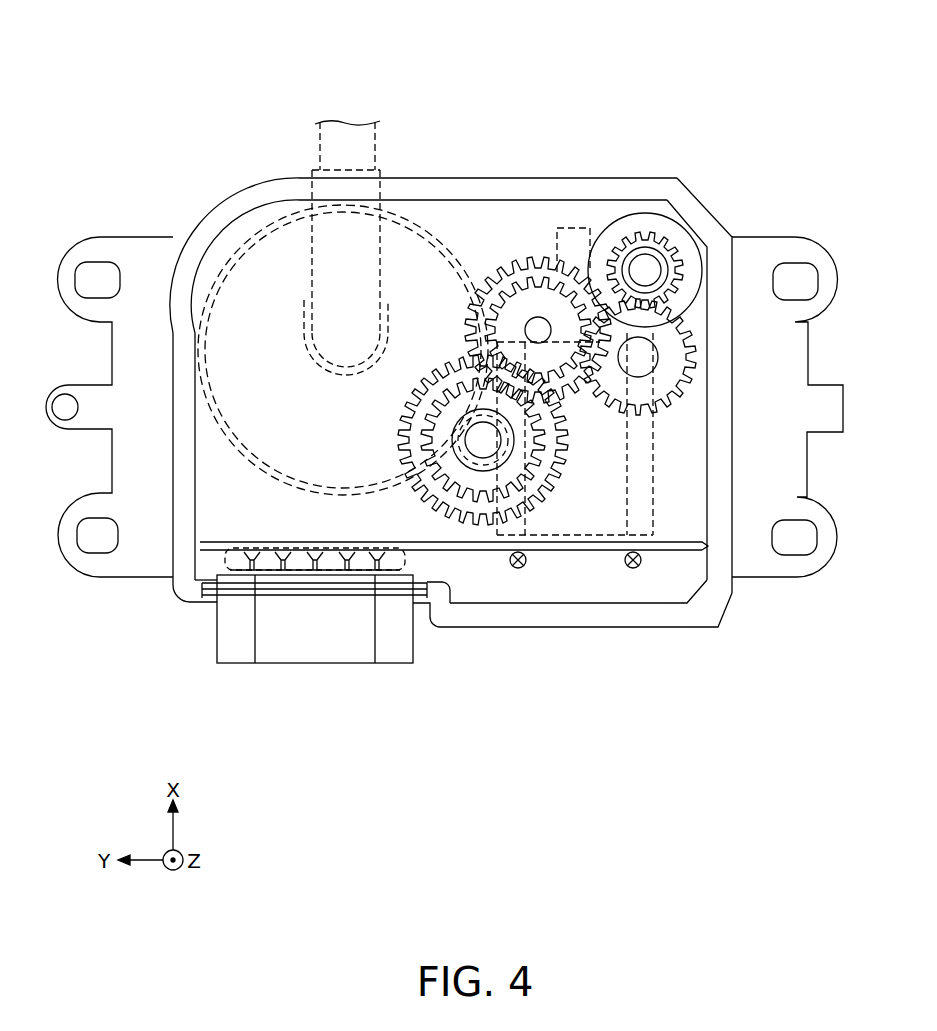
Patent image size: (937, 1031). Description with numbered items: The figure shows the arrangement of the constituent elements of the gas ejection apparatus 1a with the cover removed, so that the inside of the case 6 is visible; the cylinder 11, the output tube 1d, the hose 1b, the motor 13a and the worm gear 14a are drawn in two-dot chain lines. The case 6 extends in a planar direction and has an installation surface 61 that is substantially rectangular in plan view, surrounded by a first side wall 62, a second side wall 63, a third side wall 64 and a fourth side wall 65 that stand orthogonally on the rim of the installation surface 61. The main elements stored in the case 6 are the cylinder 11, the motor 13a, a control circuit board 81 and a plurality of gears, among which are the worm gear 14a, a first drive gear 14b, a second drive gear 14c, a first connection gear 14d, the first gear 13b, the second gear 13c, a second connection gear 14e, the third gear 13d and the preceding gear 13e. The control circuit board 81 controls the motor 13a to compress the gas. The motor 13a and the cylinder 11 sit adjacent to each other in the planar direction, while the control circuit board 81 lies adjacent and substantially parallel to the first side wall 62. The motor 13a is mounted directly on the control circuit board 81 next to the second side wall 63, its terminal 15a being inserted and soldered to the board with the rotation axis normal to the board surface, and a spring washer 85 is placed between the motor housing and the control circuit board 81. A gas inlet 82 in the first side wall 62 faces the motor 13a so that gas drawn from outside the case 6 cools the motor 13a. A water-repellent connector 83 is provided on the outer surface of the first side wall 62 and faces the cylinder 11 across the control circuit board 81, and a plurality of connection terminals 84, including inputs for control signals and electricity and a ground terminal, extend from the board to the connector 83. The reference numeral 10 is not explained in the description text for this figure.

The gas ejection apparatus 1a is at (220, 68).
The hose 1b is at (348, 130).
The output tube 1d is at (310, 305).
The case 6 is at (722, 612).
The case 10 is at (282, 246).
The cylinder 11 is at (237, 395).
The motor 13a is at (655, 490).
The first gear 13b is at (700, 348).
The second gear 13c is at (522, 262).
The third gear 13d is at (547, 480).
The preceding gear 13e is at (505, 525).
The worm gear 14a is at (575, 240).
The first drive gear 14b is at (640, 212).
The second drive gear 14c is at (665, 246).
The first connection gear 14d is at (688, 323).
The second connection gear 14e is at (505, 290).
The terminal 15a is at (518, 570).
The installation surface 61 is at (213, 497).
The first side wall 62 is at (440, 607).
The second side wall 63 is at (720, 440).
The third side wall 64 is at (183, 465).
The fourth side wall 65 is at (444, 192).
The control circuit board 81 is at (700, 548).
The gas inlet 82 is at (656, 640).
The connector 83 is at (228, 625).
The connection terminals 84 is at (328, 572).
The spring washer 85 is at (585, 556).